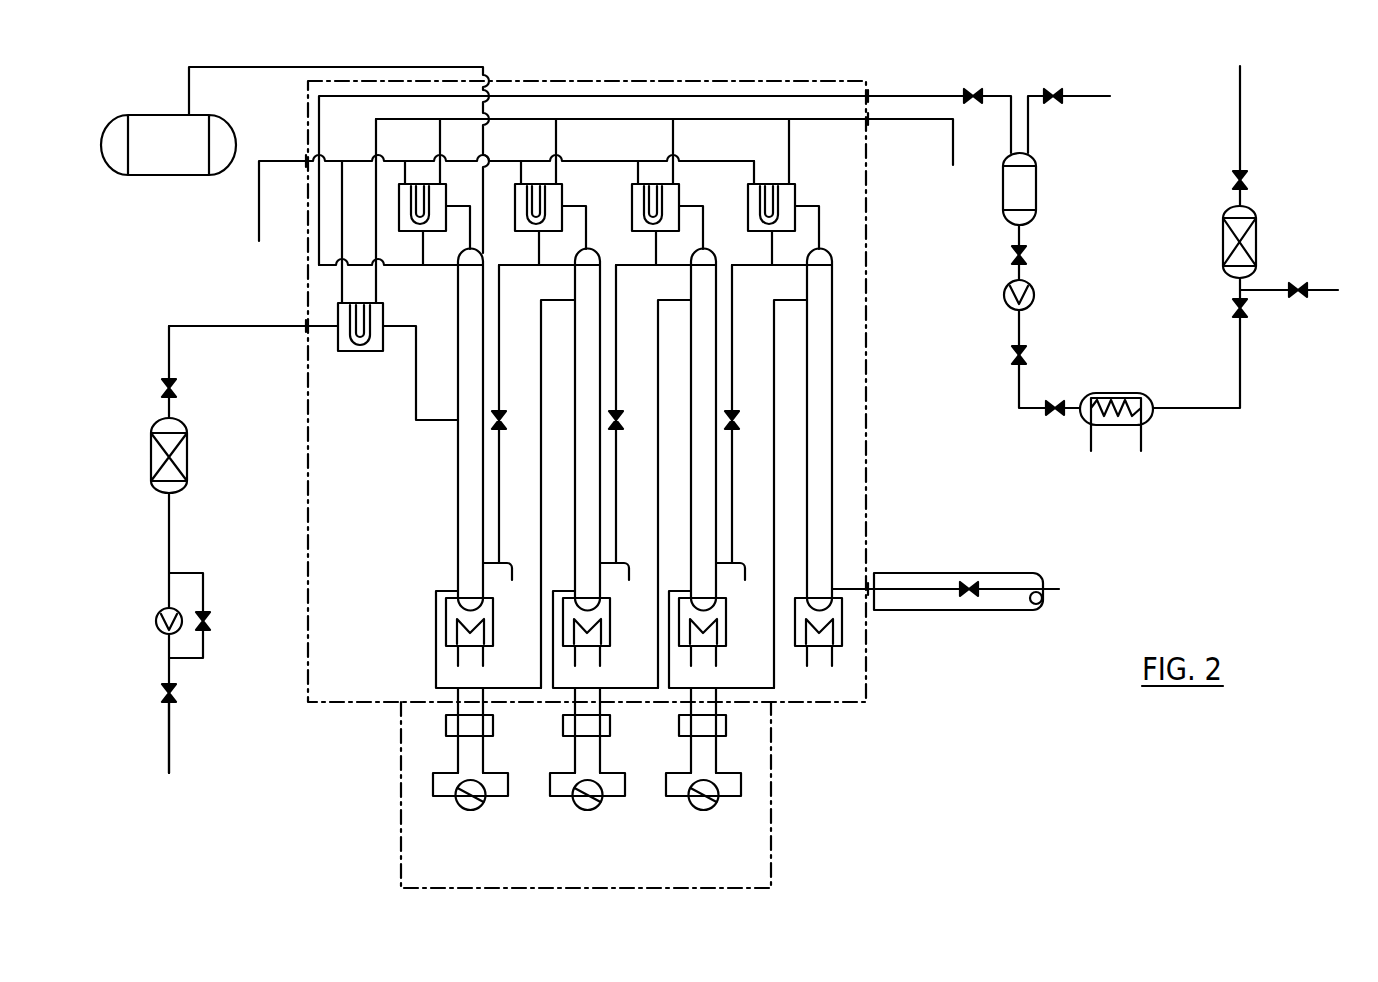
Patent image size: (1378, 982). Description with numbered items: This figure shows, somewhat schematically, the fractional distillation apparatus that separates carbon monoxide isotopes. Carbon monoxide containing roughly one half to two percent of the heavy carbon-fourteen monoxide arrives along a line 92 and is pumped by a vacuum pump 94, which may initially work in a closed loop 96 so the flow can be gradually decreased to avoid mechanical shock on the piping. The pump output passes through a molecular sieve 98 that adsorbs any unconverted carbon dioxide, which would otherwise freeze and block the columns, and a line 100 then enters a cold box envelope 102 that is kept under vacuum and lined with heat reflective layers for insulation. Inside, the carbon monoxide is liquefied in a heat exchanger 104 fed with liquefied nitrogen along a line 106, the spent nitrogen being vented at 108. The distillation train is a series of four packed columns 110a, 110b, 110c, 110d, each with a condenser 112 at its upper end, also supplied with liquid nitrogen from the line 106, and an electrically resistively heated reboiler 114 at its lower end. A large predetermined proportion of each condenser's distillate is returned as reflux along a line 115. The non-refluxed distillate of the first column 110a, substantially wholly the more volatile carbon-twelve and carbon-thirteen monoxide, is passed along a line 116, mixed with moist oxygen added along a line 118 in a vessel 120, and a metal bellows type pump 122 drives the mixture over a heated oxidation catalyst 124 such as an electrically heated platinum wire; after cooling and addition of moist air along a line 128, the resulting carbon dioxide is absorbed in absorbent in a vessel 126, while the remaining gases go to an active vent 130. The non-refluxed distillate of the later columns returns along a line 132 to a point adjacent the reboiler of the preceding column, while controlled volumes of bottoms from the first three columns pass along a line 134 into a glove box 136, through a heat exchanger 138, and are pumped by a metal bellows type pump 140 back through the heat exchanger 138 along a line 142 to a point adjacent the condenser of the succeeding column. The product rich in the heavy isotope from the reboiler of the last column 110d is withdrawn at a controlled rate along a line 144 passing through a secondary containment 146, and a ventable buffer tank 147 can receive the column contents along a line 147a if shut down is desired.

The line 92 is at (170, 745).
The vacuum pump 94 is at (155, 608).
The closed loop 96 is at (202, 572).
The molecular sieve 98 is at (186, 455).
The line 100 is at (212, 323).
The cold box envelope 102 is at (305, 385).
The heat exchanger 104 is at (372, 348).
The line 106 is at (655, 114).
The vent 108 is at (258, 198).
The first column 110a is at (497, 430).
The second column 110b is at (615, 430).
The third column 110c is at (731, 430).
The last column 110d is at (832, 560).
The condenser 112 is at (416, 229).
The reboiler 114 is at (434, 612).
The line 115 is at (437, 266).
The line 116 is at (574, 91).
The line 118 is at (1085, 90).
The vessel 120 is at (1030, 183).
The metal bellows type pump 122 is at (1027, 287).
The heated oxidation catalyst 124 is at (1110, 385).
The vessel 126 is at (1213, 245).
The line 128 is at (1313, 283).
The active vent 130 is at (1232, 134).
The line 132 is at (499, 472).
The line 134 is at (434, 672).
The glove box 136 is at (770, 797).
The heat exchanger 138 is at (493, 722).
The metal bellows type pump 140 is at (480, 805).
The line 142 is at (541, 530).
The line 144 is at (937, 585).
The secondary containment 146 is at (980, 607).
The ventable buffer tank 147 is at (165, 112).
The line 147a is at (268, 65).